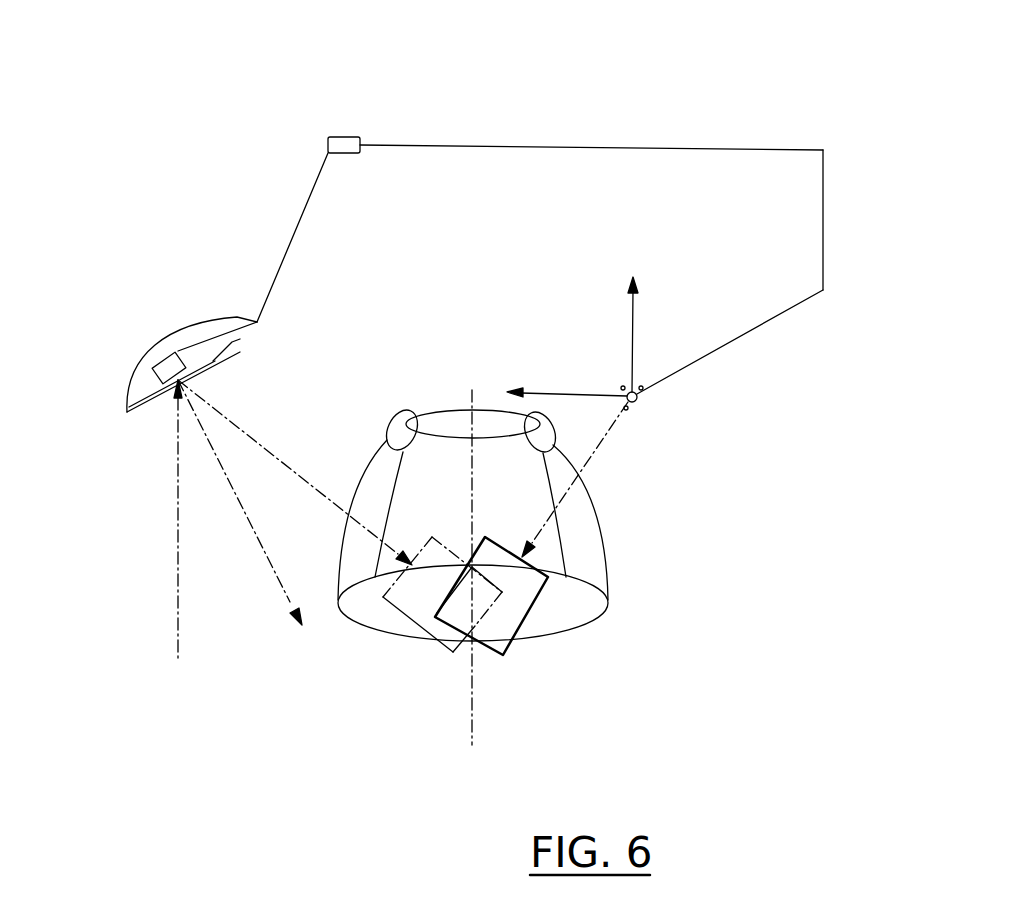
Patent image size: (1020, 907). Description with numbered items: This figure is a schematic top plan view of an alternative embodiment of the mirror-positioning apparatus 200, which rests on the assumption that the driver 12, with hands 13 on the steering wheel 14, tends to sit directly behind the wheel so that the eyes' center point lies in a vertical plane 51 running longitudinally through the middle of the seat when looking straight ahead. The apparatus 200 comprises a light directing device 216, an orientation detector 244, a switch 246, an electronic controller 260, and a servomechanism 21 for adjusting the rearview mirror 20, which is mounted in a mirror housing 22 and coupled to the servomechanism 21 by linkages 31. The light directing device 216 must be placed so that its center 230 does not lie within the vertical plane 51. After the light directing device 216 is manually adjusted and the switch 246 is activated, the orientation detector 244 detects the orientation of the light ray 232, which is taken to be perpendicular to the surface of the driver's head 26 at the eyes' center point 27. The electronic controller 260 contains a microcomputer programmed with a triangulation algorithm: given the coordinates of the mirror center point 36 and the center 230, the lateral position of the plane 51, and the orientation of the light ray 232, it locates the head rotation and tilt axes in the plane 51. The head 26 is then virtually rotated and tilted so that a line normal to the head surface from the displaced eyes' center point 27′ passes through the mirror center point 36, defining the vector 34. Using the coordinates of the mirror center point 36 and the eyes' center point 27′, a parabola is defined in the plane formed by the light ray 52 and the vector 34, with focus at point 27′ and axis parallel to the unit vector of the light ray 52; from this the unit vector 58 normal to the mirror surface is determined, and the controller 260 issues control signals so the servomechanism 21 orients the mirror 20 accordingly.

The apparatus 200 is at (612, 97).
The electronic controller 260 is at (345, 153).
The mirror housing 22 is at (135, 365).
The servomechanism 21 is at (172, 352).
The rearview mirror 20 is at (127, 412).
The mirror center point 36 is at (157, 383).
The linkages 31 is at (205, 370).
The light ray 52 is at (177, 565).
The unit vector normal to mirror surface 58 is at (252, 533).
The vector 34 is at (283, 463).
The steering wheel 14 is at (443, 410).
The hands 13 is at (393, 415).
The driver 12 is at (352, 625).
The vertical plane 51 is at (472, 745).
The driver's head 26 is at (528, 617).
The driver's eyes center point 27 is at (525, 558).
The driver's eyes center point when viewing mirror 27′ is at (405, 600).
The center of light directing device 230 is at (640, 397).
The light directing device 216 is at (655, 417).
The light ray 232 is at (595, 450).
The switch 246 is at (621, 389).
The orientation detector 244 is at (643, 389).